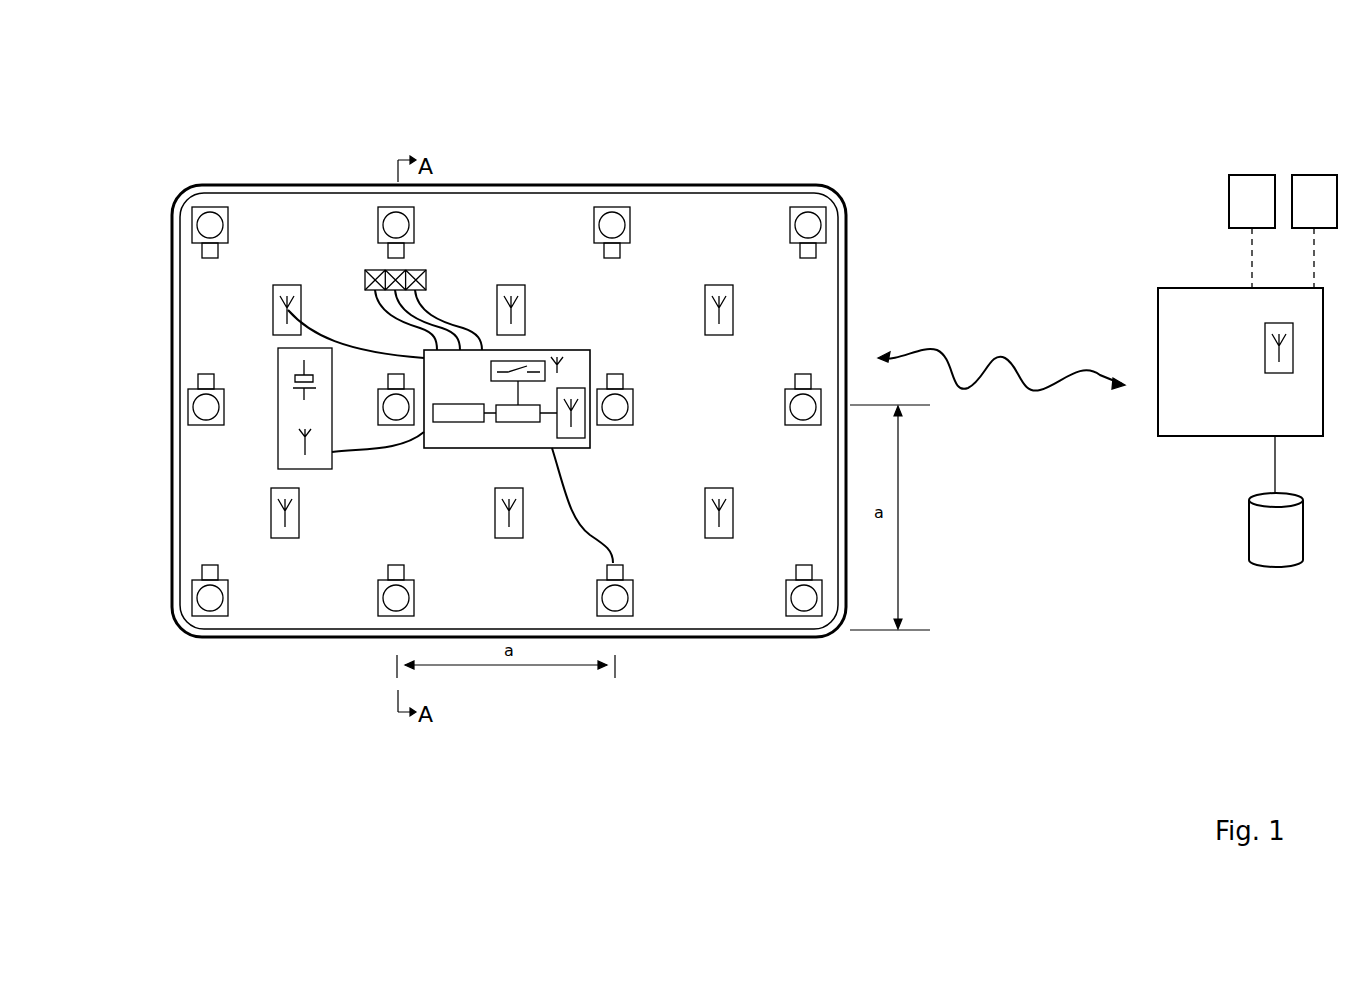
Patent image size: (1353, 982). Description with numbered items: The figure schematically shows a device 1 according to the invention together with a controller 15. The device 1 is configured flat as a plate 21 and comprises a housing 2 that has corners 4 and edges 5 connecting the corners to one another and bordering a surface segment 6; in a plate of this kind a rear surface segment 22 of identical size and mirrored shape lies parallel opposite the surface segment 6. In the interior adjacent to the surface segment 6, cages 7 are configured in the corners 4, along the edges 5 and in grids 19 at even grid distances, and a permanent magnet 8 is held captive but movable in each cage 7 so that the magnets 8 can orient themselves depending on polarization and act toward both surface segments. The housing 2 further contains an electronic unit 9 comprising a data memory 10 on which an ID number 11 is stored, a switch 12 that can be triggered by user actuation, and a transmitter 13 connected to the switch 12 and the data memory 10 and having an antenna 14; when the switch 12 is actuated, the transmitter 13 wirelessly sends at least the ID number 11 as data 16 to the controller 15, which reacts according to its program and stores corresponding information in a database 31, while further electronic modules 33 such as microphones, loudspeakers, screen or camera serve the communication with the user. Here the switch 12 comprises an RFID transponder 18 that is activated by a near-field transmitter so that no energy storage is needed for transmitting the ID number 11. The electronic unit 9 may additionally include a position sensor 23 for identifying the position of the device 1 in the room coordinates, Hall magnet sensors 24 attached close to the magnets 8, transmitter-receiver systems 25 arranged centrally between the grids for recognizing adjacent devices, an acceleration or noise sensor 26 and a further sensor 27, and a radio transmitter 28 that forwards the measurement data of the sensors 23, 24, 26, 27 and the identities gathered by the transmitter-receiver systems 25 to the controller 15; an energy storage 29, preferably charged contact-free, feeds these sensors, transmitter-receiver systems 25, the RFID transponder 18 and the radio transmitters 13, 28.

The device 1 is at (150, 178).
The plate 21 is at (464, 421).
The housing 2 is at (288, 222).
The corner 4 is at (826, 190).
The edge 5 is at (738, 192).
The surface segment 6 is at (668, 228).
The cage 7 is at (201, 207).
The permanent magnet 8 is at (213, 225).
The electronic unit 9 is at (582, 365).
The data memory 10 is at (443, 424).
The ID number 11 is at (460, 424).
The switch 12 is at (530, 380).
The transmitter 13 is at (522, 424).
The antenna 14 is at (575, 430).
The controller 15 is at (1194, 305).
The data 16 is at (1000, 352).
The RFID transponder 18 is at (560, 362).
The grid 19 is at (898, 598).
The rear surface segment 22 is at (563, 235).
The position sensor 23 is at (376, 270).
The Hall magnet sensor 24 is at (202, 383).
The transmitter-receiver system 25 is at (728, 298).
The acceleration sensor 26 is at (397, 269).
The sensor 27 is at (427, 279).
The radio transmitter 28 is at (298, 440).
The energy storage 29 is at (288, 382).
The database 31 is at (1272, 538).
The electronic module 33 is at (1315, 197).